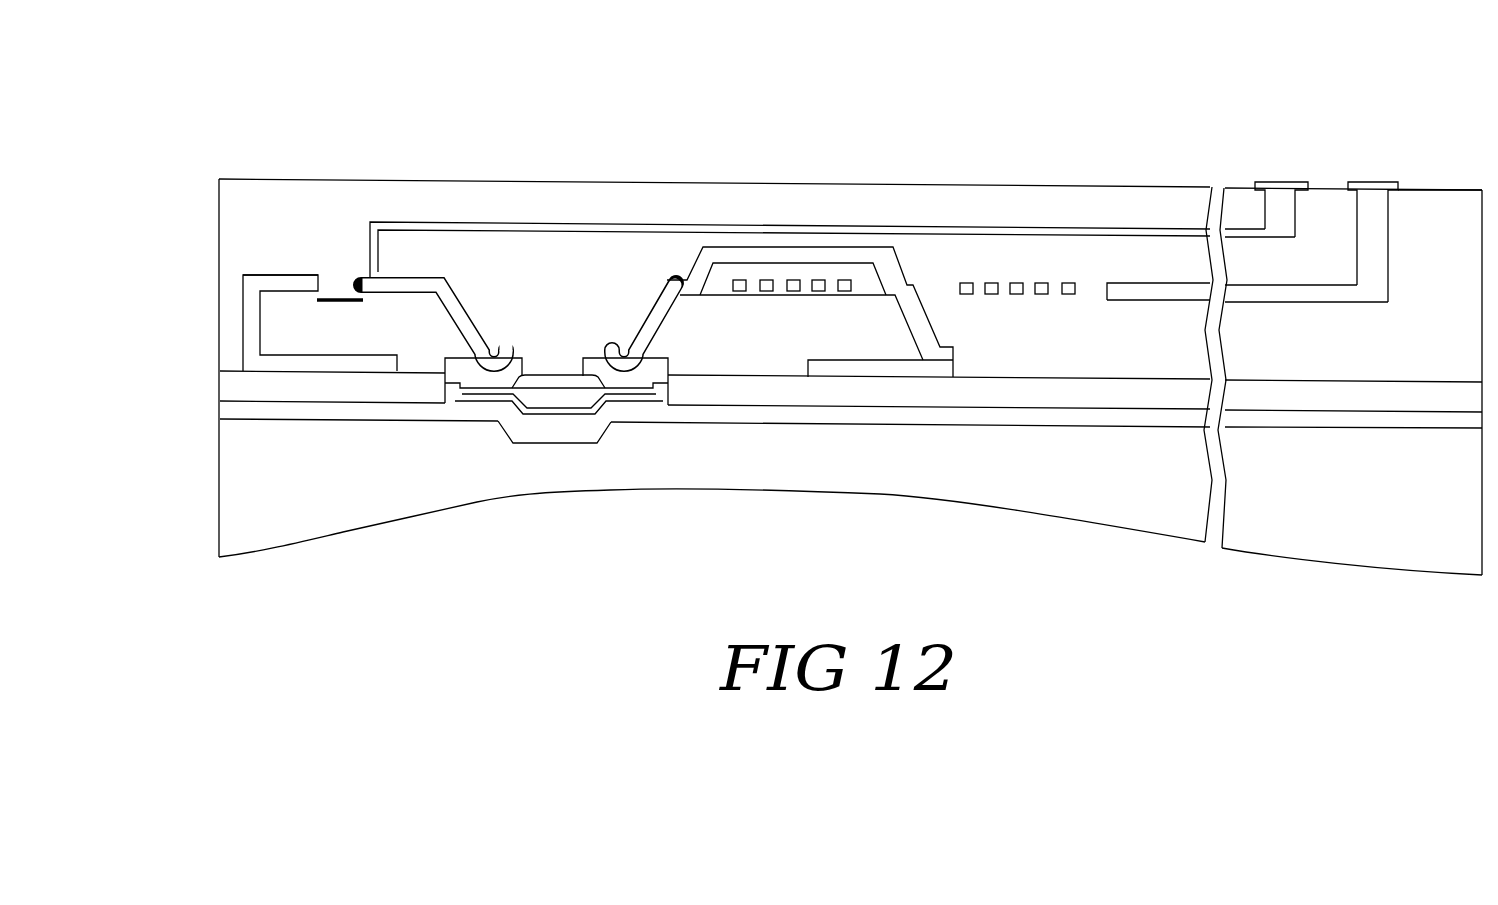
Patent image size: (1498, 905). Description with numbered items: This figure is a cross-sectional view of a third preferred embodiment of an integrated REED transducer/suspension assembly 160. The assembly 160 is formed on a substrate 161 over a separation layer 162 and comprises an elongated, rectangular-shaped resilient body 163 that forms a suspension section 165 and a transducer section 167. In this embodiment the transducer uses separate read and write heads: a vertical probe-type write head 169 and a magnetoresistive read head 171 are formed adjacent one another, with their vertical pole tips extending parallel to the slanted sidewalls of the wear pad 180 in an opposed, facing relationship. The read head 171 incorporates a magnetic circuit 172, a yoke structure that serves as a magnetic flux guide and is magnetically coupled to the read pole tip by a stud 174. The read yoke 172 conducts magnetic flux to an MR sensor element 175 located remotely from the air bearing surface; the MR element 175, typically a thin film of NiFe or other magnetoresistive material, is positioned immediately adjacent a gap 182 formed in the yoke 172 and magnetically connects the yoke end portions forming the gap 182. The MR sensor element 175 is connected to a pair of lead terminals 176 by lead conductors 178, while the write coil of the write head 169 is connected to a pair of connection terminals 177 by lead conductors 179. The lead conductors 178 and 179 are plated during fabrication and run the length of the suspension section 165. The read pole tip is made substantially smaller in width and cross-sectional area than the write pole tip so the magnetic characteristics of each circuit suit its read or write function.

The integrated REED transducer/suspension assembly 160 is at (960, 110).
The substrate 161 is at (1147, 510).
The separation layer 162 is at (912, 417).
The resilient body 163 is at (1465, 189).
The suspension section 165 is at (1189, 187).
The transducer section 167 is at (578, 179).
The write head 169 is at (775, 300).
The magnetoresistive read head 171 is at (276, 303).
The magnetic circuit 172 is at (252, 286).
The stud 174 is at (522, 372).
The MR sensor element 175 is at (342, 288).
The lead terminals 176 is at (1280, 182).
The connection terminals 177 is at (1380, 182).
The lead conductors 178 is at (1087, 229).
The lead conductors 179 is at (1297, 303).
The wear pad 180 is at (603, 444).
The gap 182 is at (329, 283).